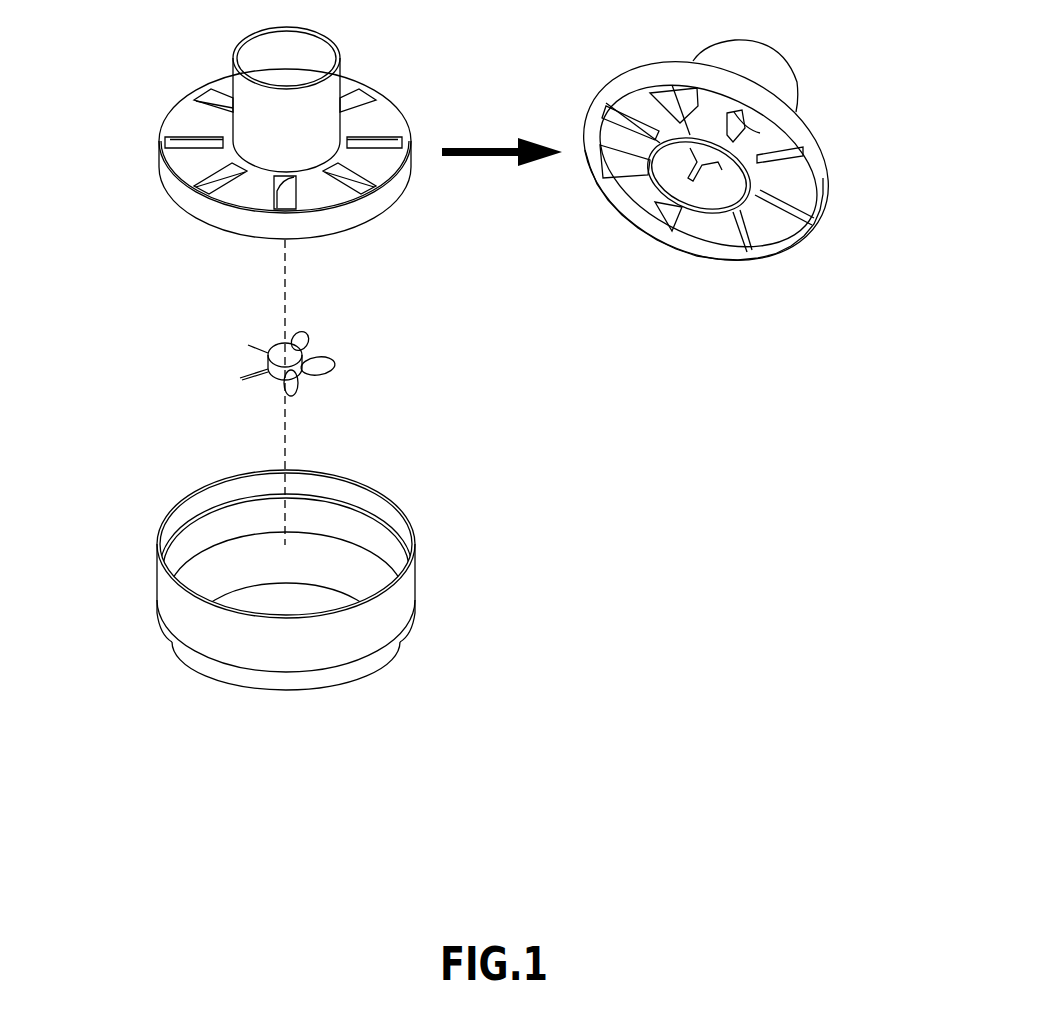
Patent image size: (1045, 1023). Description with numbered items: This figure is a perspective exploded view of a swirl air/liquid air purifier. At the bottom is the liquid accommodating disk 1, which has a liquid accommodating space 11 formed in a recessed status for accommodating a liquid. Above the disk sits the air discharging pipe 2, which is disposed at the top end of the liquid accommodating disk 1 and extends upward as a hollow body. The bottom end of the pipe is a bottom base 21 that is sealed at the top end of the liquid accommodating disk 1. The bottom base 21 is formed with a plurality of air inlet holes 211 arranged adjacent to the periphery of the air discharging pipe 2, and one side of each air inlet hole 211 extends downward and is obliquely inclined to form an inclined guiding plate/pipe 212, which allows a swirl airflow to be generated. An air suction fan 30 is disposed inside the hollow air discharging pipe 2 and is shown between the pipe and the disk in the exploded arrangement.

The liquid accommodating disk 1 is at (347, 556).
The liquid accommodating space 11 is at (343, 500).
The air discharging pipe 2 is at (320, 84).
The bottom base 21 is at (177, 113).
The air inlet holes 211 is at (160, 134).
The inclined guiding plate/pipe 212 is at (667, 212).
The air suction fan 30 is at (352, 347).